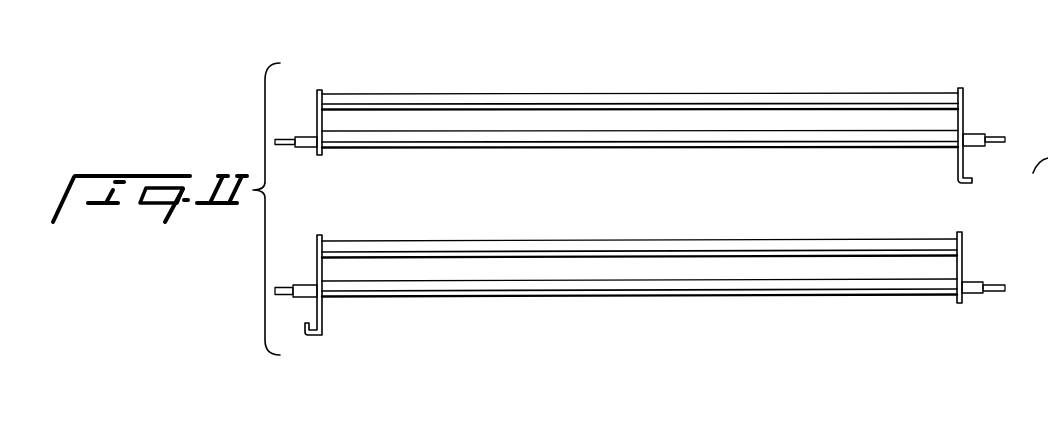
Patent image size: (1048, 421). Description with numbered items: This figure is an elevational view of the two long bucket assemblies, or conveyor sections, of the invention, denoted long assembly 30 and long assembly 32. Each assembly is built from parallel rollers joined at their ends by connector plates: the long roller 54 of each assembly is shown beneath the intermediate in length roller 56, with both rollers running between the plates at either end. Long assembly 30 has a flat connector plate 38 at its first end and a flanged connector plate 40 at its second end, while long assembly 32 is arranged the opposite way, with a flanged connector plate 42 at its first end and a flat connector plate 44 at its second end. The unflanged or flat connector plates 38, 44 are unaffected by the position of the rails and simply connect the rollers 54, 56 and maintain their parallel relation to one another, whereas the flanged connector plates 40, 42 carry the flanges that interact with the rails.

The long assembly 30 is at (634, 82).
The long assembly 32 is at (621, 236).
The flat connector plate 38 is at (318, 92).
The flanged connector plate 40 is at (965, 113).
The flanged connector plate 42 is at (317, 260).
The flat connector plate 44 is at (964, 265).
The long roller 54 is at (815, 147).
The intermediate in length roller 56 is at (838, 96).